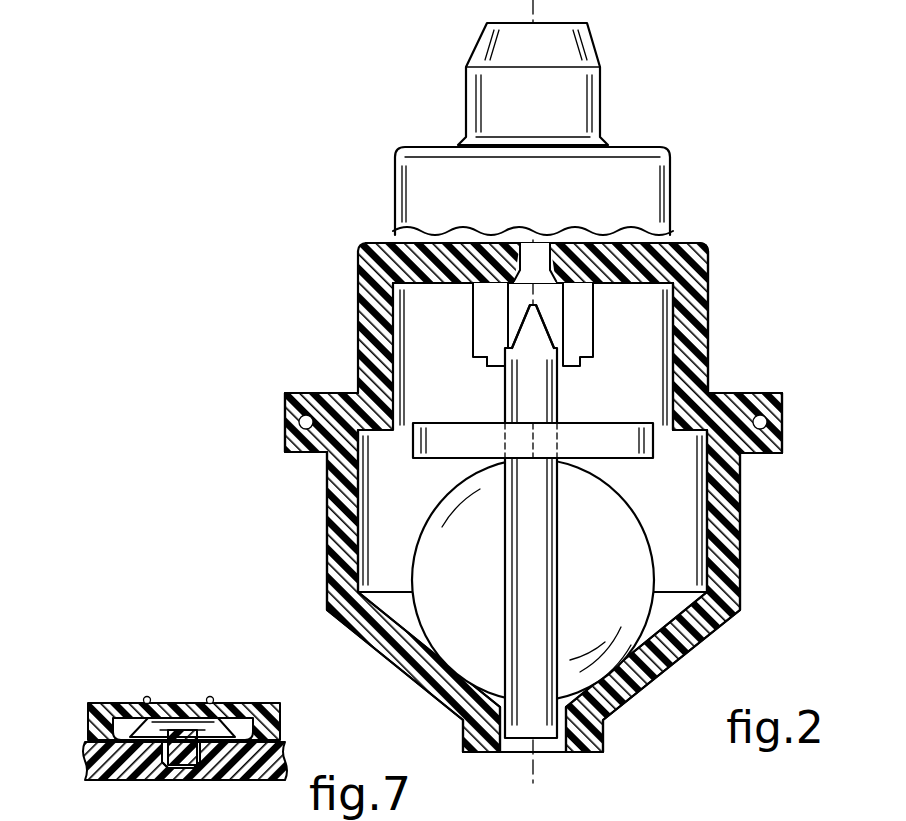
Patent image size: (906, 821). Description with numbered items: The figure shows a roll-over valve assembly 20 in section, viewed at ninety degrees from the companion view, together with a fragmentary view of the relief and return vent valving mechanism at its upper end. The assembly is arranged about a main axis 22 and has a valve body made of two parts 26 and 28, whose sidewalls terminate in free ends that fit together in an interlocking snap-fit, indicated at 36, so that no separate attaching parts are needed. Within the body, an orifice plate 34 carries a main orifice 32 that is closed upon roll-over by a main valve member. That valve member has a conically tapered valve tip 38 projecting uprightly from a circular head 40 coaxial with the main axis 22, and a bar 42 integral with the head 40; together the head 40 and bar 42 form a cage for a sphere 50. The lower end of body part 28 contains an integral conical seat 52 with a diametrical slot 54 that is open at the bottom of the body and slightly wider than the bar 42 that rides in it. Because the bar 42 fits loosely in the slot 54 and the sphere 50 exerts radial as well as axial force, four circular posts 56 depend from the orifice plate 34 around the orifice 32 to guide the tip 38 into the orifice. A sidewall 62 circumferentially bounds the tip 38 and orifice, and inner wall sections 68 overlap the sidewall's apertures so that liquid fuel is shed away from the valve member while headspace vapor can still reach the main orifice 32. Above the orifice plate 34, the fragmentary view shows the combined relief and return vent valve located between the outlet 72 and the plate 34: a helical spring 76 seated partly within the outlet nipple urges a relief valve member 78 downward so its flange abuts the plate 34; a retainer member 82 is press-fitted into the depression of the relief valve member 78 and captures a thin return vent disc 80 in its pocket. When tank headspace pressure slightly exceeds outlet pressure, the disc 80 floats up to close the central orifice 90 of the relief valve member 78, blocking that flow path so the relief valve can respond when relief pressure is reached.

In FIG. 2, the roll-over valve assembly 20 is at (690, 134).
In FIG. 2, the main axis 22 is at (533, 105).
In FIG. 2, the valve body part 26 is at (707, 245).
In FIG. 2, the valve body part 28 is at (742, 618).
In FIG. 2, the main orifice 32 is at (522, 248).
In FIG. 7, the main orifice 32 is at (193, 758).
In FIG. 2, the orifice plate 34 is at (627, 253).
In FIG. 7, the orifice plate 34 is at (287, 750).
In FIG. 2, the fit of free ends 36 is at (783, 410).
In FIG. 2, the valve tip 38 is at (537, 388).
In FIG. 2, the circular head 40 is at (607, 448).
In FIG. 2, the bar 42 is at (557, 550).
In FIG. 2, the sphere 50 is at (442, 533).
In FIG. 2, the conical seat 52 is at (387, 600).
In FIG. 2, the diametrical slot 54 is at (513, 743).
In FIG. 2, the circular posts 56 is at (487, 328).
In FIG. 2, the sidewall 62 is at (712, 330).
In FIG. 2, the wall section 68 is at (500, 367).
In FIG. 2, the outlet 72 is at (601, 78).
In FIG. 7, the helical spring 76 is at (213, 703).
In FIG. 7, the relief valve member 78 is at (273, 703).
In FIG. 7, the return vent valve member 80 is at (175, 722).
In FIG. 7, the retainer member 82 is at (228, 747).
In FIG. 7, the central circular orifice 90 is at (170, 702).